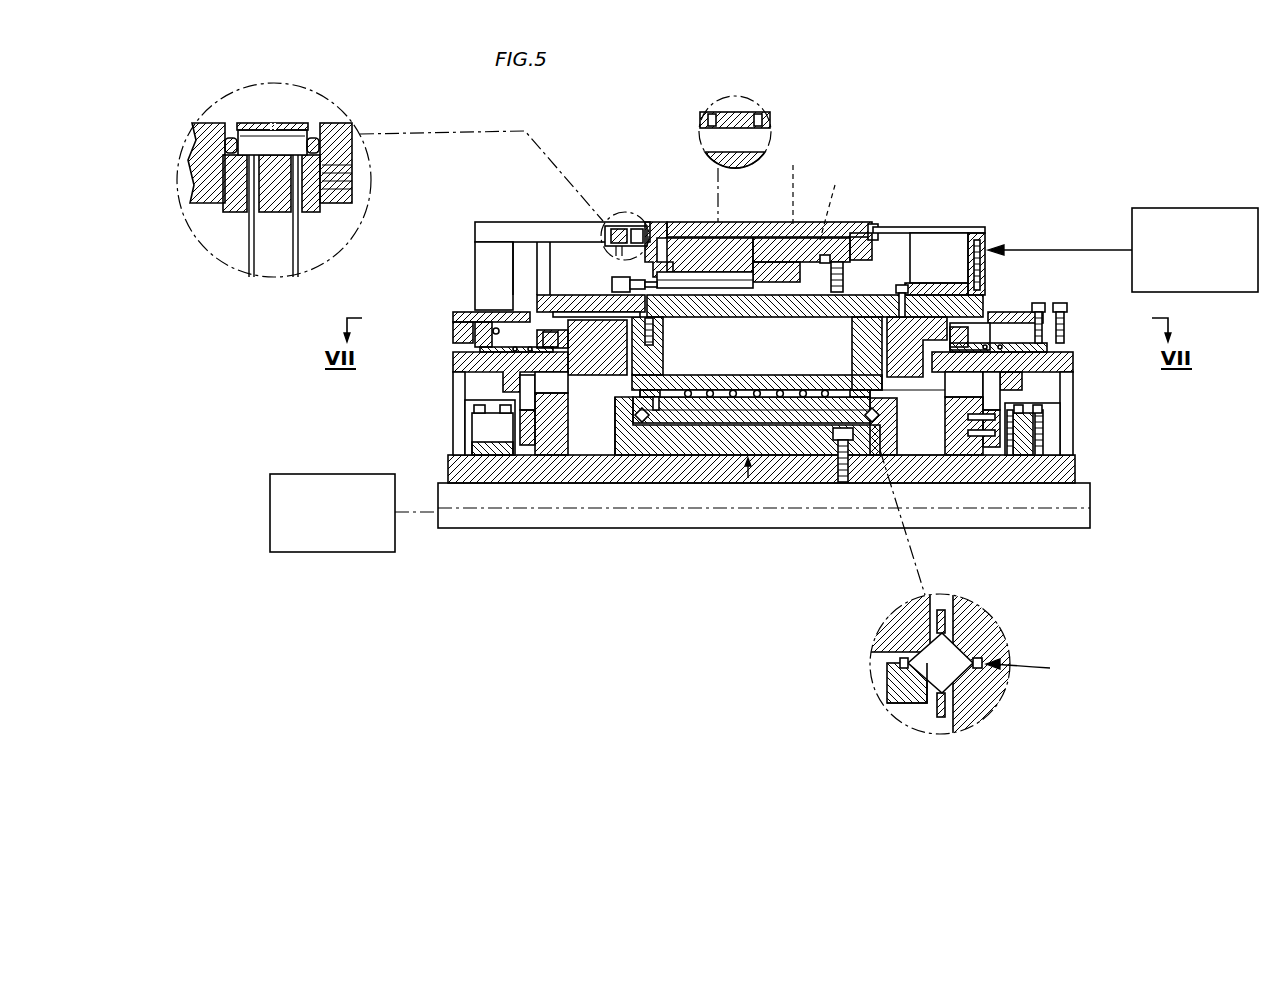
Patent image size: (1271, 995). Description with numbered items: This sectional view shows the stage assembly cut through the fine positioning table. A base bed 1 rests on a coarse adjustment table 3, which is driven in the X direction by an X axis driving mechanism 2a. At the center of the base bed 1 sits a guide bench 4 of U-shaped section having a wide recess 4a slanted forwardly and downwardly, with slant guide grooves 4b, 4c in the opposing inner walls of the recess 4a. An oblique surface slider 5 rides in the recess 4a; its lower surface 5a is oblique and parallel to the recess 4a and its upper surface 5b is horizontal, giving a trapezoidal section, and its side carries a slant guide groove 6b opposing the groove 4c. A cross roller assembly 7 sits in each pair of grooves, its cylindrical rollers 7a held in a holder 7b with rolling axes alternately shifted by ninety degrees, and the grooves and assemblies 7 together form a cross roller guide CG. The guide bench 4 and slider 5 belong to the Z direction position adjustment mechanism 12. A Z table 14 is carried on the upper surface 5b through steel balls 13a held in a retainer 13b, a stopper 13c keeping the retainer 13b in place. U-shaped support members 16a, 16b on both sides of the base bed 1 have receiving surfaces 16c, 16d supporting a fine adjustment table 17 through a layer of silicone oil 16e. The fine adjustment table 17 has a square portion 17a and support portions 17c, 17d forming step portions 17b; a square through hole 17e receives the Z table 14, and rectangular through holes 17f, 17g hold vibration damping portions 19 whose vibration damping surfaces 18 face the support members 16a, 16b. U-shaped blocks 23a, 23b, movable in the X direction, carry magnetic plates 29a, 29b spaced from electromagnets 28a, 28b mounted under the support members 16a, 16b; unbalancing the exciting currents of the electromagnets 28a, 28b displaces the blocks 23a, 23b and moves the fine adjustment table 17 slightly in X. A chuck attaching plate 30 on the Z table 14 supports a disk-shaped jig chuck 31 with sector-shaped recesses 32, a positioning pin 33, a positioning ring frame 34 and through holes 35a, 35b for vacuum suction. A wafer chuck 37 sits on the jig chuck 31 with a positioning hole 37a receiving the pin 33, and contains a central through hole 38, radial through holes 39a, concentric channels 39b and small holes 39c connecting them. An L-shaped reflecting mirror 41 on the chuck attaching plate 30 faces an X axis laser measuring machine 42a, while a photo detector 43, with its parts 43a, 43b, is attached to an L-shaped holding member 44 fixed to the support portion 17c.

The base bed 1 is at (1075, 463).
The X axis driving mechanism 2a is at (283, 556).
The coarse adjustment table 3 is at (1090, 498).
The guide bench 4 is at (660, 425).
The recess 4a is at (745, 480).
The slant guide groove 4b is at (650, 425).
The slant guide groove 4c is at (976, 660).
The oblique surface slider 5 is at (700, 425).
The lower surface 5a is at (765, 422).
The upper surface 5b is at (890, 410).
The slant guide groove 6b is at (905, 690).
The cross roller assembly 7 is at (635, 420).
The cylindrical rollers 7a is at (925, 655).
The holder 7b is at (946, 623).
The Z direction position adjustment mechanism 12 is at (748, 455).
The steel balls 13a is at (798, 425).
The retainer 13b is at (830, 400).
The stopper 13c is at (666, 400).
The Z table 14 is at (645, 408).
The U-shaped support member 16a is at (500, 380).
The U-shaped support member 16b is at (1065, 400).
The receiving surface 16c is at (480, 392).
The receiving surface 16d is at (1068, 390).
The layer of silicone oil 16e is at (452, 360).
The fine adjustment table 17 is at (610, 378).
The square portion 17a is at (913, 377).
The step portions 17b is at (584, 325).
The support portion 17c is at (452, 334).
The support portion 17d is at (1068, 343).
The through hole 17e is at (870, 337).
The rectangular through hole 17f is at (452, 315).
The rectangular through hole 17g is at (1068, 328).
The vibration damping surfaces 18 is at (503, 342).
The vibration damping portions 19 is at (492, 345).
The U-shaped block 23a is at (550, 455).
The U-shaped block 23b is at (965, 455).
The electromagnet 28a is at (485, 455).
The electromagnet 28b is at (1030, 455).
The magnetic plate 29a is at (527, 445).
The magnetic plate 29b is at (990, 447).
The chuck attaching plate 30 is at (935, 322).
The jig chuck 31 is at (800, 262).
The recesses 32 is at (768, 240).
The positioning pin 33 is at (832, 262).
The positioning ring frame 34 is at (880, 240).
The through hole 35a is at (661, 230).
The through hole 35b is at (838, 200).
The wafer chuck 37 is at (796, 183).
The positioning hole 37a is at (855, 250).
The through hole 38 is at (740, 222).
The through holes 39a is at (706, 140).
The channels 39b is at (748, 112).
The small holes 39c is at (706, 118).
The reflecting mirror 41 is at (987, 232).
The X axis laser measuring machine 42a is at (1232, 208).
The photo detector 43 is at (301, 148).
The sensor ring 43a is at (258, 123).
The sensor cap 43b is at (270, 123).
The L-shaped holding member 44 is at (206, 208).
The cross roller guide CG is at (1034, 667).